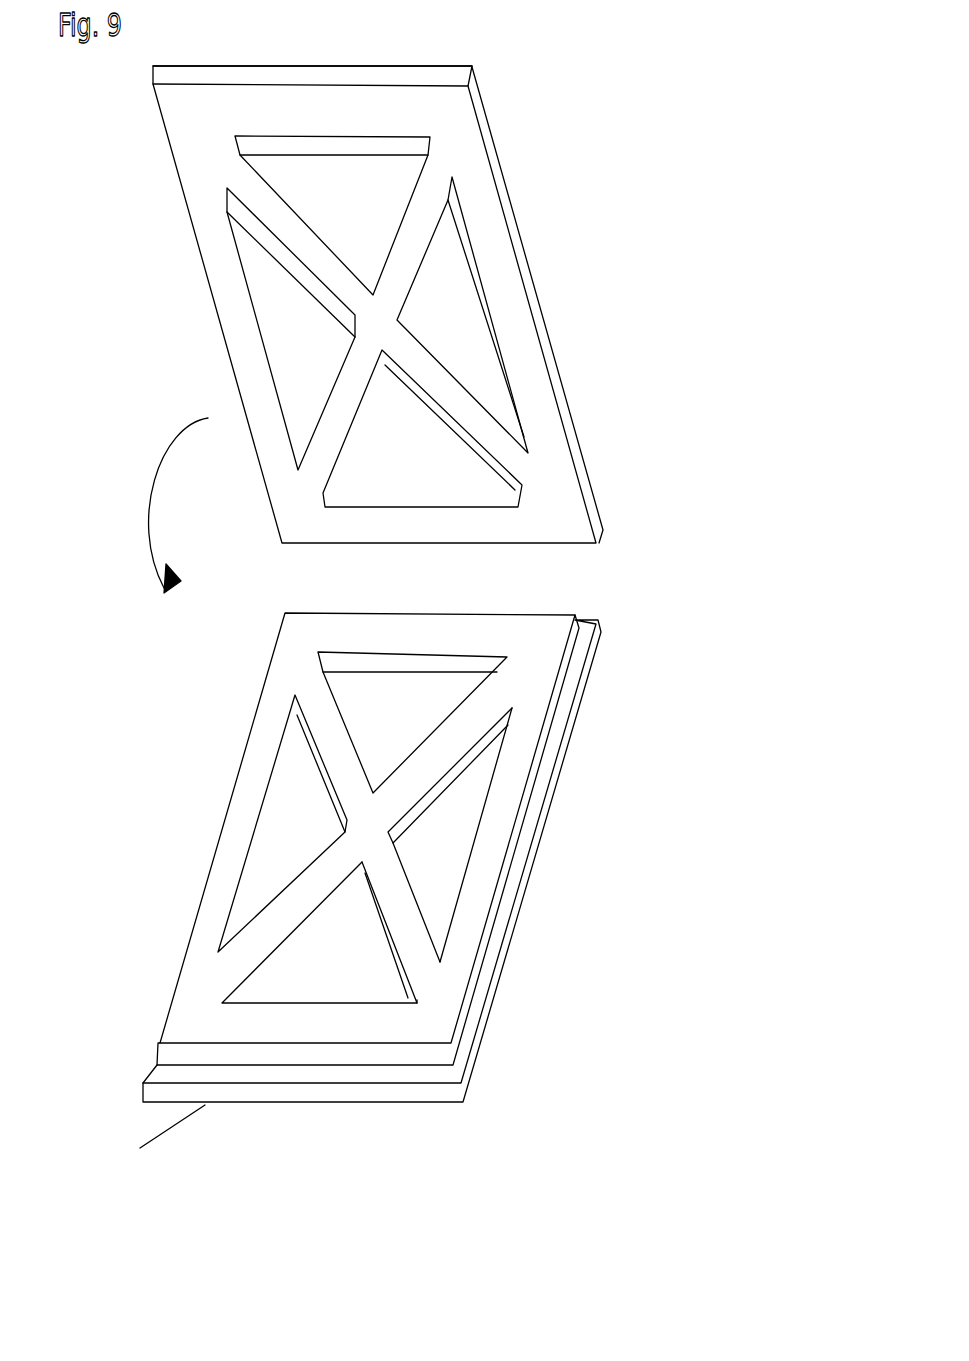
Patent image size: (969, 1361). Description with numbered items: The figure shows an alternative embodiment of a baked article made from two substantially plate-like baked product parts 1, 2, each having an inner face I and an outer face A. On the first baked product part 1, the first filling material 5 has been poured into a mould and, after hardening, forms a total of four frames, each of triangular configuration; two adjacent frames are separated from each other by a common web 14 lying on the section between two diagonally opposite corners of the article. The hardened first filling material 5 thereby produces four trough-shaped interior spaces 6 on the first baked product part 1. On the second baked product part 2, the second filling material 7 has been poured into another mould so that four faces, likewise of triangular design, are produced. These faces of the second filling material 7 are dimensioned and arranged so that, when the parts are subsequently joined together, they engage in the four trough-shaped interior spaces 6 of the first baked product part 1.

The first baked product part 1 is at (488, 1033).
The second baked product part 2 is at (528, 248).
The first filling material 5 is at (403, 627).
The trough-shaped interior spaces 6 is at (402, 708).
The second filling material 7 is at (377, 321).
The web 14 is at (398, 912).
The outer face A is at (487, 118).
The inner face I is at (405, 98).